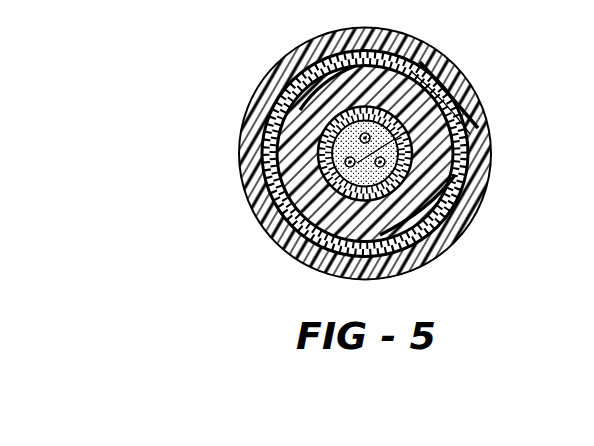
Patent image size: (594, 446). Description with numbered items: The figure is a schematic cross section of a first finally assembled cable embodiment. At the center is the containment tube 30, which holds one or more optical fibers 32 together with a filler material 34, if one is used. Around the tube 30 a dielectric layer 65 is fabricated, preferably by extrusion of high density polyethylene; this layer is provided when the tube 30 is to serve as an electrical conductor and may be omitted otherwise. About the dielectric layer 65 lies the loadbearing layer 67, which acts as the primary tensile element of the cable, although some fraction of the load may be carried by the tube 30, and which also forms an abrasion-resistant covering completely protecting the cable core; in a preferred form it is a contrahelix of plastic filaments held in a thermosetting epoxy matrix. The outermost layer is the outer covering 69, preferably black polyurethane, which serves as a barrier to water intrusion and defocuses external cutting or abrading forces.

The containment tube 30 is at (412, 161).
The optical fibers 32 is at (478, 95).
The filler material 34 is at (432, 254).
The dielectric layer 65 is at (258, 217).
The loadbearing layer 67 is at (264, 131).
The outer covering 69 is at (285, 73).